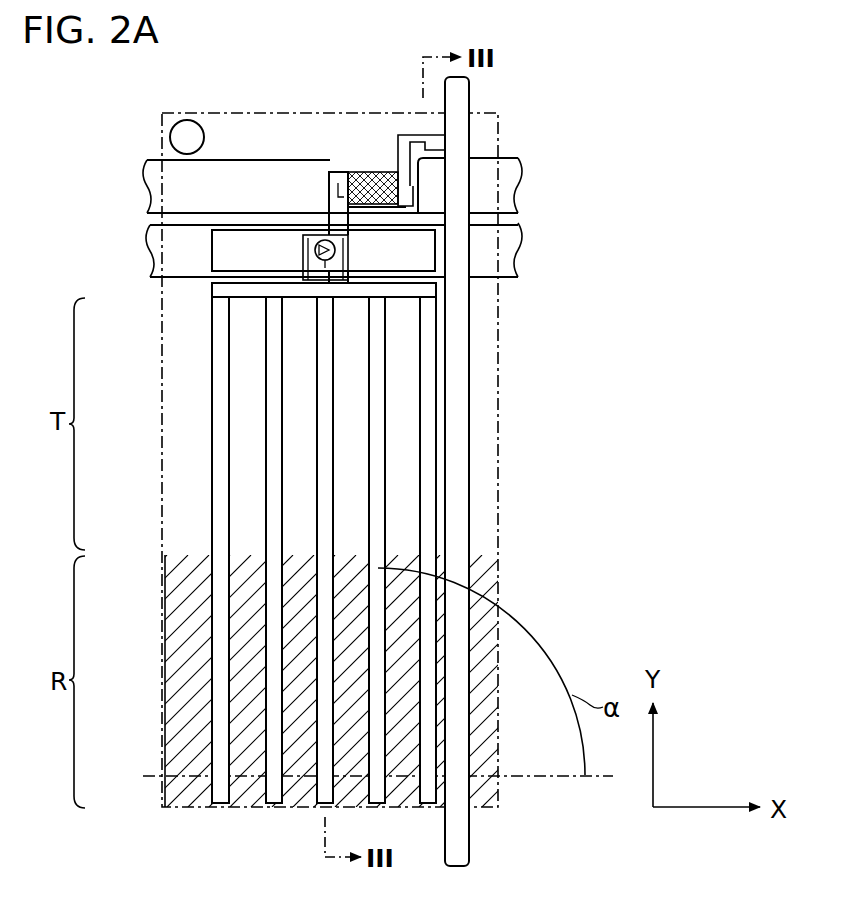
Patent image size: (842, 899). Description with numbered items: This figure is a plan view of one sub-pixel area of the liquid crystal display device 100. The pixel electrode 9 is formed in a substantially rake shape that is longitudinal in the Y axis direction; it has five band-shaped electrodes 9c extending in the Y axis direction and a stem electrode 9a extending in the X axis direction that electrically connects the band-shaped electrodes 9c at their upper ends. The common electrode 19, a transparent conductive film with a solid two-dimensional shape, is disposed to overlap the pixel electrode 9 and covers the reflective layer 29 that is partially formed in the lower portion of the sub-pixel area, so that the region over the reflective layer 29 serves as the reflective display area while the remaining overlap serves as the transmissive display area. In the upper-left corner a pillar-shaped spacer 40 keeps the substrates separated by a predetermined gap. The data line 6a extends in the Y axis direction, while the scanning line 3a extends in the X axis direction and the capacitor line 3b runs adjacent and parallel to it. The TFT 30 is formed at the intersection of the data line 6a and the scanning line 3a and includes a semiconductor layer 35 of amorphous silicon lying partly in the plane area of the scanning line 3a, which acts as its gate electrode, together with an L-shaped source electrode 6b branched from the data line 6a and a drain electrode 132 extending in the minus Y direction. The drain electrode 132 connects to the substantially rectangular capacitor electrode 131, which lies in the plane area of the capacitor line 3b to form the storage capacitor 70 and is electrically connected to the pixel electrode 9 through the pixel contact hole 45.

The liquid crystal display device 100 is at (507, 90).
The TFT 30 is at (350, 146).
The pillar-shaped spacer 40 is at (188, 121).
The drain electrode 132 is at (338, 172).
The semiconductor layer 35 is at (378, 172).
The source electrode 6b is at (402, 135).
The data line 6a is at (470, 850).
The scanning line 3a is at (157, 167).
The capacitor line 3b is at (157, 272).
The storage capacitor 70 is at (204, 262).
The capacitor electrode 131 is at (212, 247).
The pixel contact hole 45 is at (303, 253).
The pixel electrode 9 is at (205, 403).
The stem electrode 9a is at (258, 290).
The band-shaped electrode 9c is at (222, 806).
The common electrode 19 is at (500, 436).
The reflective layer 29 is at (498, 737).